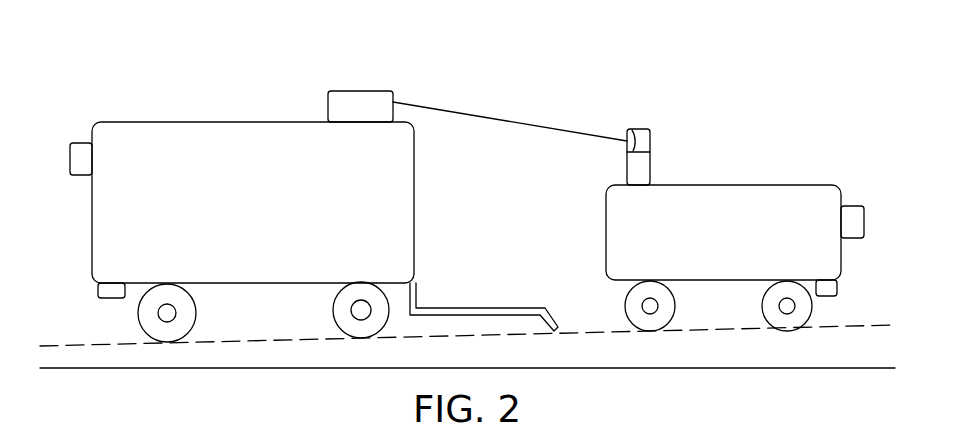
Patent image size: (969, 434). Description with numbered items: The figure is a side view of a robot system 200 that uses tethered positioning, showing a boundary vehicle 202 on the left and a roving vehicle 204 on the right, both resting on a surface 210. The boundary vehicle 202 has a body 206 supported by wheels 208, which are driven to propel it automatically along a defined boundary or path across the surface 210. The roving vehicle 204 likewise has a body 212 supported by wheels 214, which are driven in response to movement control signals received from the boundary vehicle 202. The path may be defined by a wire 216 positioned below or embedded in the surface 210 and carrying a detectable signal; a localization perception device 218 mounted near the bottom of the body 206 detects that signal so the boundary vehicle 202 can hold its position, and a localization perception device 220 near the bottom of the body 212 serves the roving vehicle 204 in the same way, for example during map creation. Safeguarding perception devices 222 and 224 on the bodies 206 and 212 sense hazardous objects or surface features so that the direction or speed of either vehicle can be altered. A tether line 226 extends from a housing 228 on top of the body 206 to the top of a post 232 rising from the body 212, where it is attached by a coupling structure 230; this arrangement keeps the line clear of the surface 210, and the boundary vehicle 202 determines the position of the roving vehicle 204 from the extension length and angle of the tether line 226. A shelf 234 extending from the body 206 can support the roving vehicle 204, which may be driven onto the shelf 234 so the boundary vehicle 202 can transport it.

The robot system 200 is at (736, 70).
The boundary vehicle 202 is at (253, 170).
The roving vehicle 204 is at (723, 198).
The body 206 is at (264, 121).
The wheels 208 is at (138, 313).
The surface 210 is at (530, 335).
The body 212 is at (701, 184).
The wheels 214 is at (625, 302).
The wire 216 is at (705, 369).
The localization perception device 218 is at (96, 290).
The localization perception device 220 is at (838, 291).
The safeguarding perception device 222 is at (81, 142).
The safeguarding perception device 224 is at (855, 205).
The tether line 226 is at (511, 114).
The housing 228 is at (358, 90).
The coupling structure 230 is at (641, 132).
The post 232 is at (626, 166).
The shelf 234 is at (486, 307).